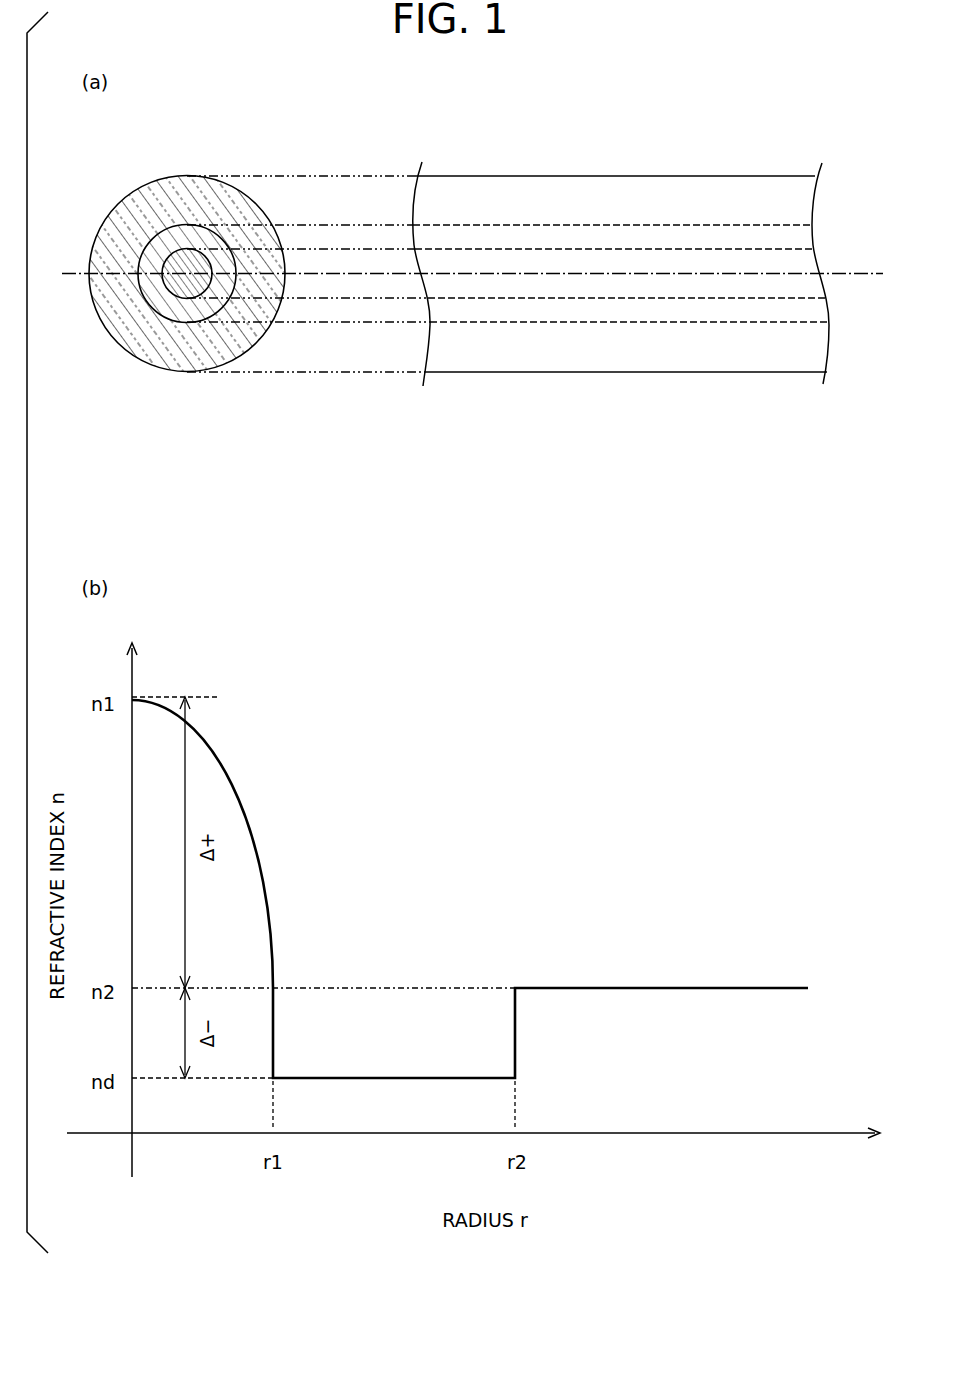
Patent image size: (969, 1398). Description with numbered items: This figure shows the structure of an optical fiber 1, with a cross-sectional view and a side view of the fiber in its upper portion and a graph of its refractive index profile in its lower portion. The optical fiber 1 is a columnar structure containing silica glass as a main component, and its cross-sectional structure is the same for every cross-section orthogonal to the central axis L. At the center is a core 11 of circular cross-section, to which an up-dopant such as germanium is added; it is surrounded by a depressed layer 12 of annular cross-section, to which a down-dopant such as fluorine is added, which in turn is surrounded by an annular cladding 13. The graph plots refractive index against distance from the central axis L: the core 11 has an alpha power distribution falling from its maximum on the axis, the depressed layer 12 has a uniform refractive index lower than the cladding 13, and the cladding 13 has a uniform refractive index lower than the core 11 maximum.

The optical fiber 1 is at (458, 269).
The core 11 is at (168, 300).
The depressed layer 12 is at (185, 323).
The cladding 13 is at (241, 355).
The central axis L is at (472, 259).